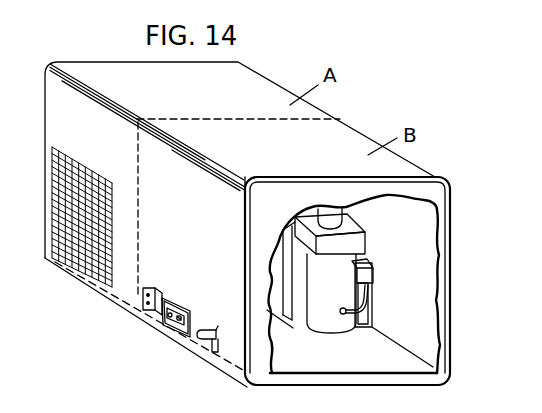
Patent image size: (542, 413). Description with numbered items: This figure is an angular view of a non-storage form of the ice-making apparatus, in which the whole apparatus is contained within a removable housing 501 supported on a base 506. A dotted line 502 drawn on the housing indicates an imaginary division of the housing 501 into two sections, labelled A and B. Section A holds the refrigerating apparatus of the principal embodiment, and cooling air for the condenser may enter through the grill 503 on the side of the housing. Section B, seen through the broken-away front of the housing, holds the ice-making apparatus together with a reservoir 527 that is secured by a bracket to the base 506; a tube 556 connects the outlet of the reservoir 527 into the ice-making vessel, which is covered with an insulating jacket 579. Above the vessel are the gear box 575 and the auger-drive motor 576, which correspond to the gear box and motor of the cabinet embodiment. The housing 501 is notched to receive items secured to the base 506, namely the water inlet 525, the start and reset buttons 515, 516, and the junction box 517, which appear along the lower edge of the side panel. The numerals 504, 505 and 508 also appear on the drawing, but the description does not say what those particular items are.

The housing 501 is at (90, 47).
The dotted line 502 is at (220, 118).
The grill 503 is at (103, 149).
The lower side panel 504 is at (163, 255).
The interior liner wall 505 is at (422, 342).
The base 506 is at (362, 377).
The compressor 508 is at (299, 313).
The start button 515 is at (172, 327).
The reset button 516 is at (181, 323).
The junction box 517 is at (145, 303).
The water inlet 525 is at (207, 368).
The reservoir 527 is at (373, 280).
The tube 556 is at (370, 312).
The gear box 575 is at (354, 245).
The auger-drive motor 576 is at (338, 219).
The insulating jacket 579 is at (340, 302).